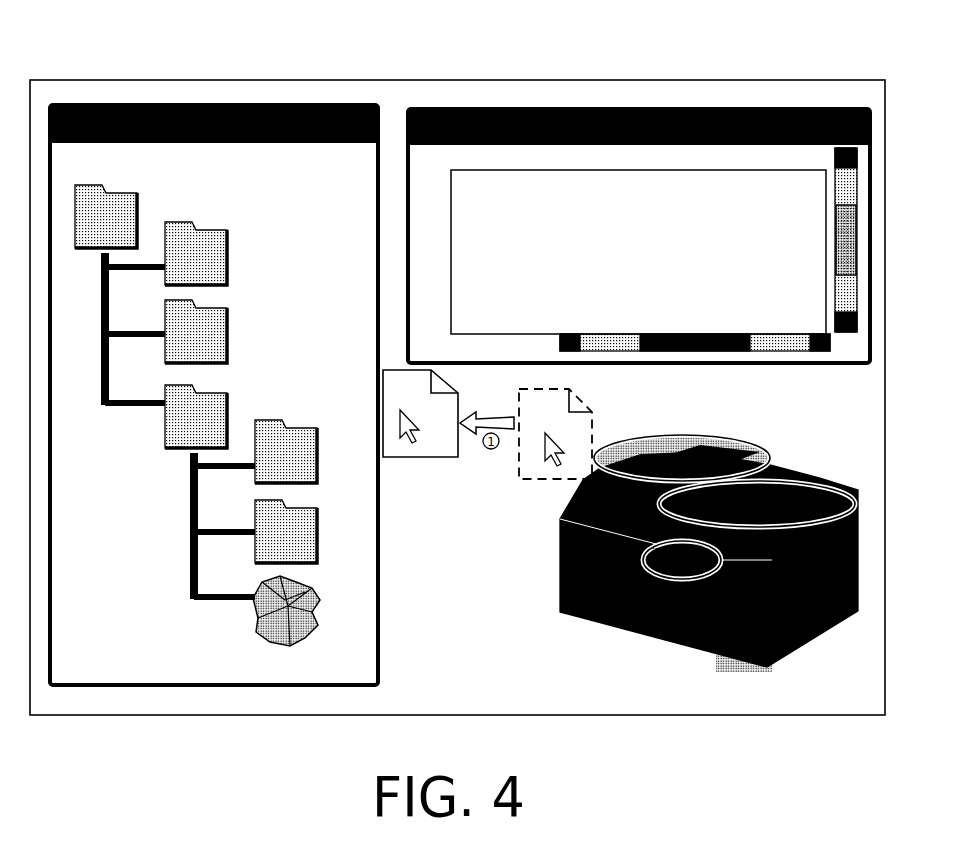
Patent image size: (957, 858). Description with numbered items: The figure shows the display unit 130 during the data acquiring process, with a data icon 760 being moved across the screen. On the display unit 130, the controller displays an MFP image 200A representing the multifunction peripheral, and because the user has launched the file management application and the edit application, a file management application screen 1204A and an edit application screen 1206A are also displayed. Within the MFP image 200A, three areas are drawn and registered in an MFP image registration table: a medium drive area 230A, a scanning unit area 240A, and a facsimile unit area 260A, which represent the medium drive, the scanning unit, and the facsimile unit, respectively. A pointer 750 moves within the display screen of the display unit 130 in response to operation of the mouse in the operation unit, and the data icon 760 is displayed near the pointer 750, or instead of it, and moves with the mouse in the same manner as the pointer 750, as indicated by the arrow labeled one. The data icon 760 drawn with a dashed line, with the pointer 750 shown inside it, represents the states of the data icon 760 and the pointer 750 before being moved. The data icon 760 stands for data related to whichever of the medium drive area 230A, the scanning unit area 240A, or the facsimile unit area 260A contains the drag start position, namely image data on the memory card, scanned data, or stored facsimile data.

The display unit 130 is at (474, 51).
The file management application screen 1204A is at (191, 105).
The edit application screen 1206A is at (624, 109).
The MFP image 200A is at (758, 665).
The facsimile unit area 260A is at (684, 436).
The scanning unit area 240A is at (786, 482).
The medium drive area 230A is at (660, 579).
The pointer 750 is at (413, 430).
The data icon 760 is at (393, 459).